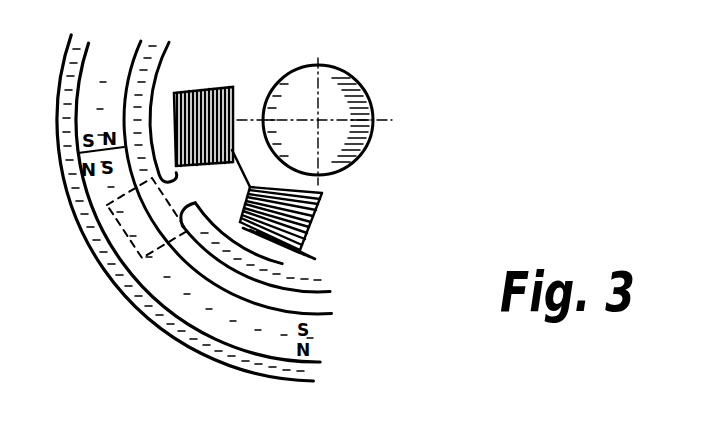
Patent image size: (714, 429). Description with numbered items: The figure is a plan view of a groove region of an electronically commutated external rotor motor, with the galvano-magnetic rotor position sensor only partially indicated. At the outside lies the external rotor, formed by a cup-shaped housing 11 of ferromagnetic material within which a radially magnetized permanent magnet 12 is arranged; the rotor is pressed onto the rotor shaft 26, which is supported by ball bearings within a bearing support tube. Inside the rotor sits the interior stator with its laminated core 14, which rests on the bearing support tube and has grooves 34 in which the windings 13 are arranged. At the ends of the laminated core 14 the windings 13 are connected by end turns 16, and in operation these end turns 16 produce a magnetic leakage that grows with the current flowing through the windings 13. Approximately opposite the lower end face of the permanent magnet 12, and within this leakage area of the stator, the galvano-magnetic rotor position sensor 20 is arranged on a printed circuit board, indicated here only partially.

The cup-shaped housing 11 is at (167, 317).
The permanent magnet 12 is at (243, 328).
The windings 13 is at (315, 192).
The laminated core 14 is at (283, 263).
The end turn 16 is at (311, 223).
The galvano-magnetic rotor position sensor 20 is at (96, 258).
The rotor shaft 26 is at (347, 133).
The groove 34 is at (230, 172).